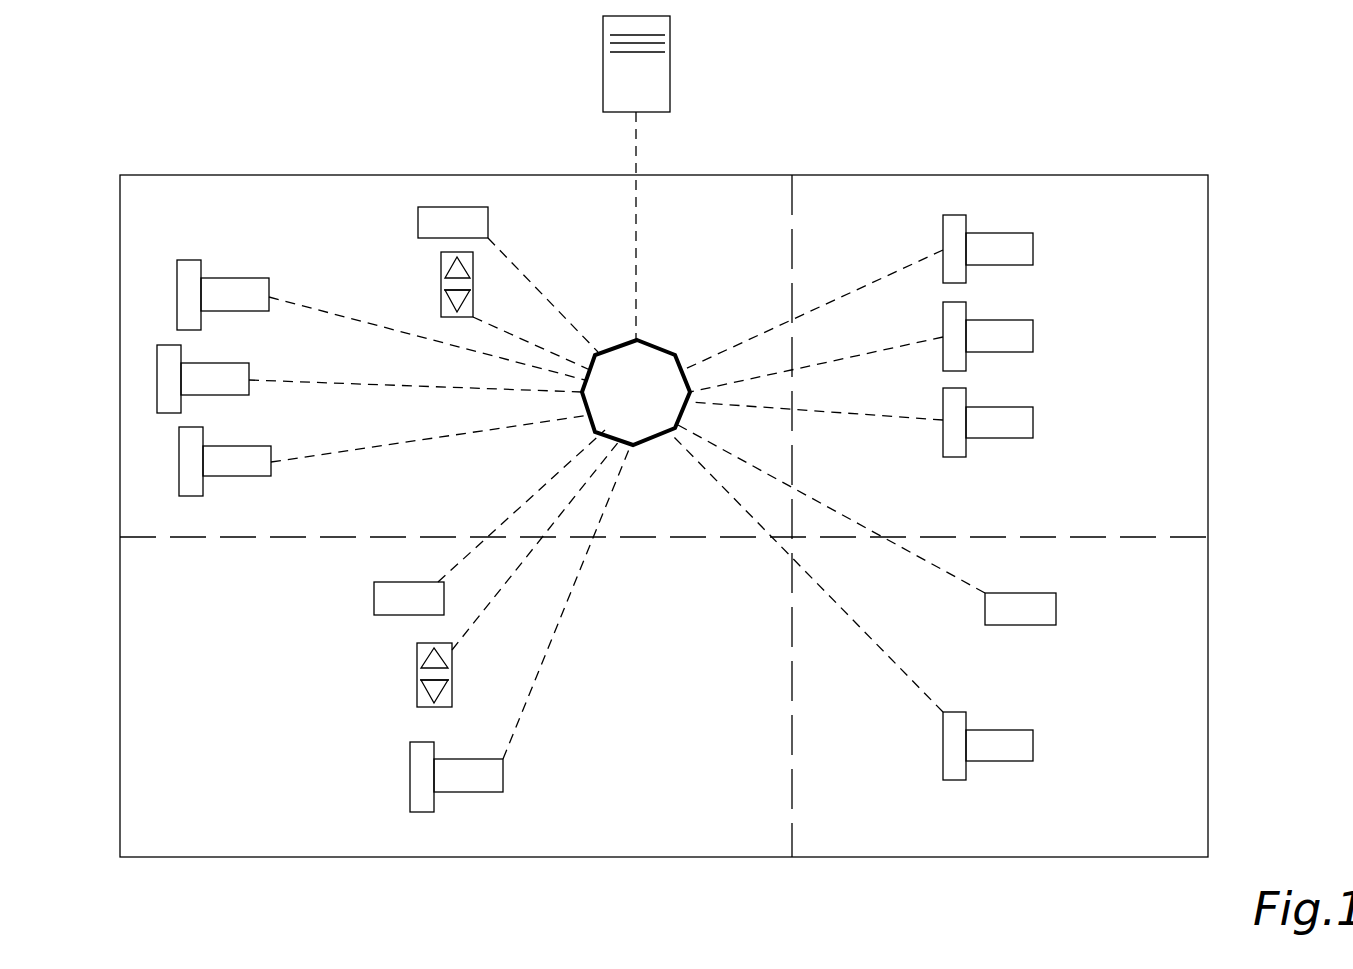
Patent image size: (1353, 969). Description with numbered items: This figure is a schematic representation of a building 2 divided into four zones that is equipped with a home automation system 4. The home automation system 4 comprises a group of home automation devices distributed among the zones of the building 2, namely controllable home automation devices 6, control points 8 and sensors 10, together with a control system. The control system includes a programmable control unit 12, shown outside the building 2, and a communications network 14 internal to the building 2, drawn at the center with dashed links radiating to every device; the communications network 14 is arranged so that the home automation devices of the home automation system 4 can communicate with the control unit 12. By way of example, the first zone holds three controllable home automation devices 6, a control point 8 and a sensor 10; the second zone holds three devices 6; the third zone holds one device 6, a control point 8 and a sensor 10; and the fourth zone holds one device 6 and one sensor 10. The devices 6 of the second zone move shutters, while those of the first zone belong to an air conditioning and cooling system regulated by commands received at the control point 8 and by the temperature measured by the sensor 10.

The building 2 is at (1208, 202).
The home automation system 4 is at (1138, 140).
The controllable home automation device 6 is at (190, 298).
The control point 8 is at (441, 285).
The sensor 10 is at (420, 224).
The programmable control unit 12 is at (616, 95).
The communications network 14 is at (636, 392).